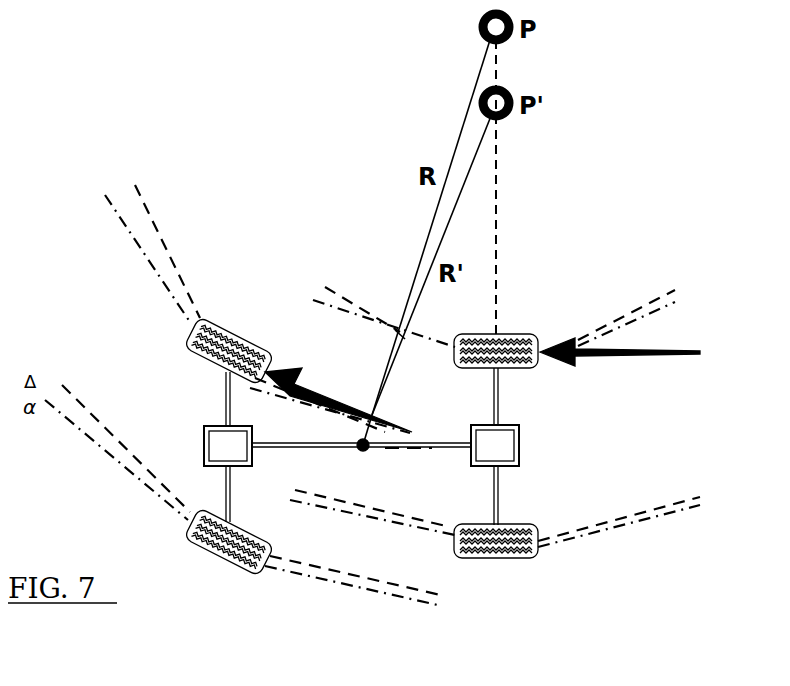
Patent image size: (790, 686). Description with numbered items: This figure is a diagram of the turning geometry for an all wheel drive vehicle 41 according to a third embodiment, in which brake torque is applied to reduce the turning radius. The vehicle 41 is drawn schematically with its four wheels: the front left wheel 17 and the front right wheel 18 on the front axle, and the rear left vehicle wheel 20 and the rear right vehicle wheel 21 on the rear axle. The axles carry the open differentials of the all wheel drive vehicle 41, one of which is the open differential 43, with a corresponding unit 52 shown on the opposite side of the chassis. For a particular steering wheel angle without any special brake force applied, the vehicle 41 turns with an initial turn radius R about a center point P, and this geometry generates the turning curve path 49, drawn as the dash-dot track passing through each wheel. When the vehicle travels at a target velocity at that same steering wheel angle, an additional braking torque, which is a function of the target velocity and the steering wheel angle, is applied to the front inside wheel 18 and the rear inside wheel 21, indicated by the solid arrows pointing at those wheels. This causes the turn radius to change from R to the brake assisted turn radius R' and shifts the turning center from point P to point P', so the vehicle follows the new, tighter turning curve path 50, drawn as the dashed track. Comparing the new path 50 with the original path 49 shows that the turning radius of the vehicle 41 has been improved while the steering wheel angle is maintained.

The front left wheel 17 is at (243, 526).
The front right wheel 18 is at (250, 334).
The rear left vehicle wheel 20 is at (517, 525).
The rear right vehicle wheel 21 is at (512, 335).
The all wheel drive vehicle 41 is at (276, 170).
The open differential 43 is at (520, 445).
The turning curve path (TCP) 49 is at (125, 228).
The turning curve path (TCP') 50 is at (150, 232).
The left wheel hub/actuator 52 is at (205, 442).